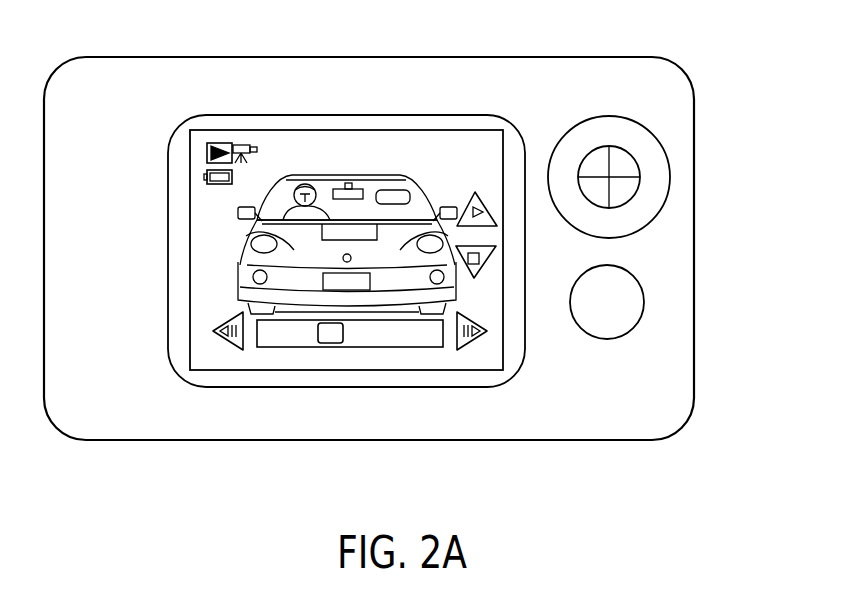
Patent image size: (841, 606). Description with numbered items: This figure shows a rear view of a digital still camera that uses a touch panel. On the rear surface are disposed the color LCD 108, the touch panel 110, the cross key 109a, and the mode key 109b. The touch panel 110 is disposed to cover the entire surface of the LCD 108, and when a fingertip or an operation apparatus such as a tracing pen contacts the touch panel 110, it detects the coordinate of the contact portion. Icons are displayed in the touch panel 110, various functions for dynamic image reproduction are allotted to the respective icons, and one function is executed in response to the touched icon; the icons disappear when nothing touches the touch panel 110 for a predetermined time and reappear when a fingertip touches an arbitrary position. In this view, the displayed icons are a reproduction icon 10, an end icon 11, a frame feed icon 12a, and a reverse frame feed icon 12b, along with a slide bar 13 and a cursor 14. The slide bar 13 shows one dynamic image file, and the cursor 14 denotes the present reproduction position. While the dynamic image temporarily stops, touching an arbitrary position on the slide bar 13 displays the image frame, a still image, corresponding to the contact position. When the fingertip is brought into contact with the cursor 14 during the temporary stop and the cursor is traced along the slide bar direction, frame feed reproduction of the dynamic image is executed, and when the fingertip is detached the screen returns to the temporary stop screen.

The reproduction icon 10 is at (486, 206).
The end icon 11 is at (482, 278).
The frame feed icon 12a is at (472, 353).
The reverse frame feed icon 12b is at (216, 334).
The slide bar 13 is at (395, 333).
The cursor 14 is at (325, 338).
The color LCD 108 is at (353, 130).
The cross key 109a is at (657, 173).
The mode key 109b is at (635, 300).
The touch panel 110 is at (473, 115).